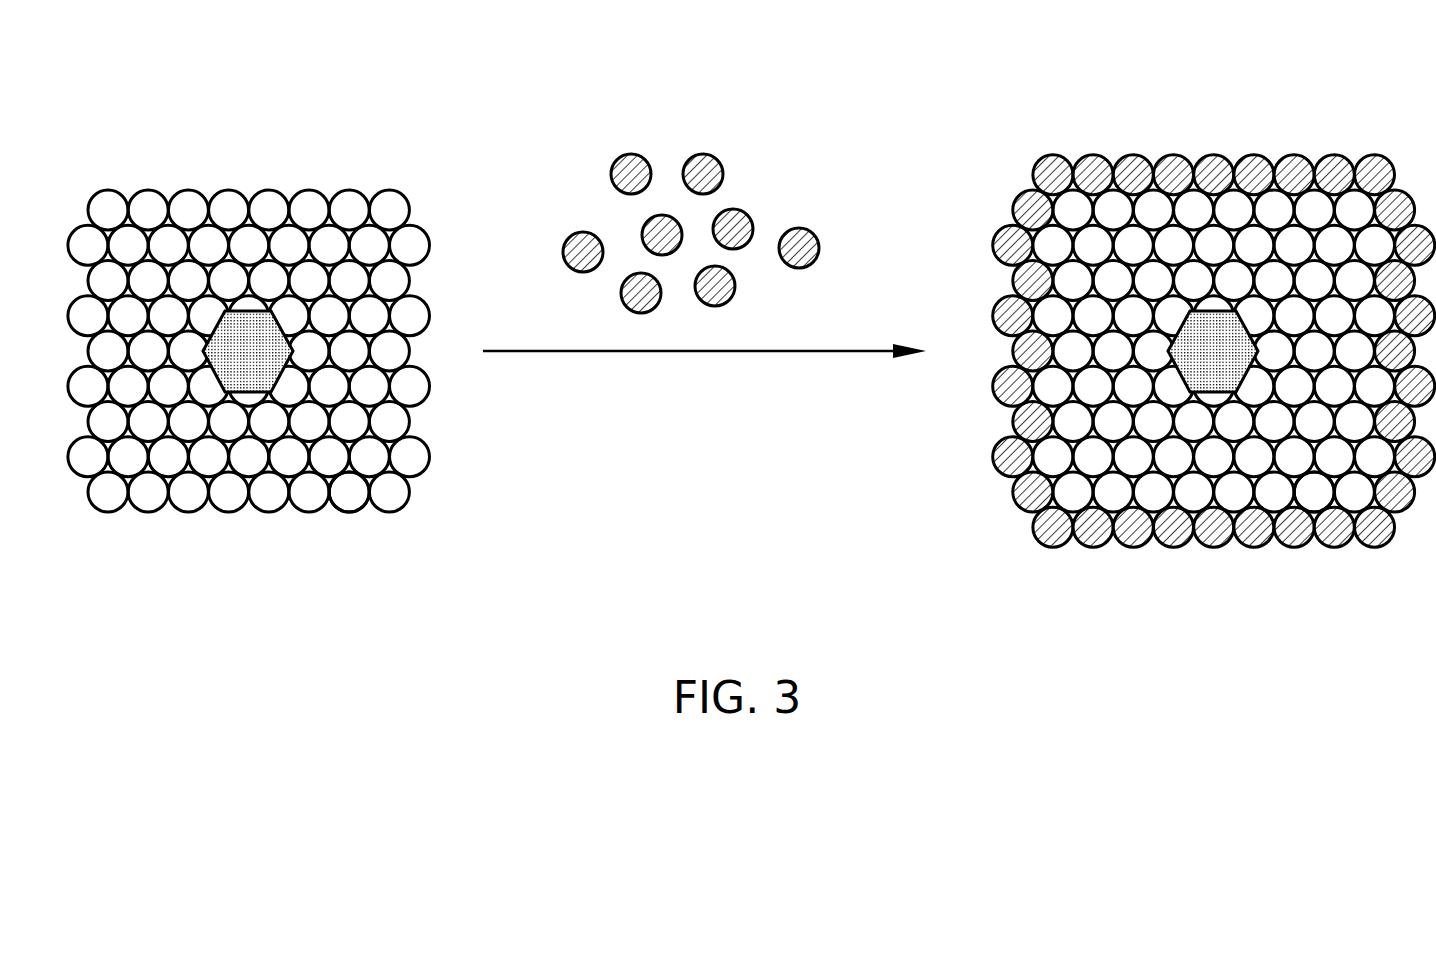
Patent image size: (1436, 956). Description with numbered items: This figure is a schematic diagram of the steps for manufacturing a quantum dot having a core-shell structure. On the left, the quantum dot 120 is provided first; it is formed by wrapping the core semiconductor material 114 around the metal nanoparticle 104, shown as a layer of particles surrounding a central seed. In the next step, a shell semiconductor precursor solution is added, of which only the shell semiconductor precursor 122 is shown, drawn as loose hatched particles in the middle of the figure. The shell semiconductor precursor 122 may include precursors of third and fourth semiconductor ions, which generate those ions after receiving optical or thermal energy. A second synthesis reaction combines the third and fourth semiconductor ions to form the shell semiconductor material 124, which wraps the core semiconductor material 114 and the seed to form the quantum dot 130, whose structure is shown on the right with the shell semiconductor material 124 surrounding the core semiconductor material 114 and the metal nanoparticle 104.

The metal nanoparticle 104 is at (245, 357).
The core semiconductor material 114 is at (353, 495).
The quantum dot 120 is at (243, 158).
The shell semiconductor precursor 122 is at (676, 132).
The shell semiconductor material 124 is at (1405, 505).
The quantum dot 130 is at (1214, 321).